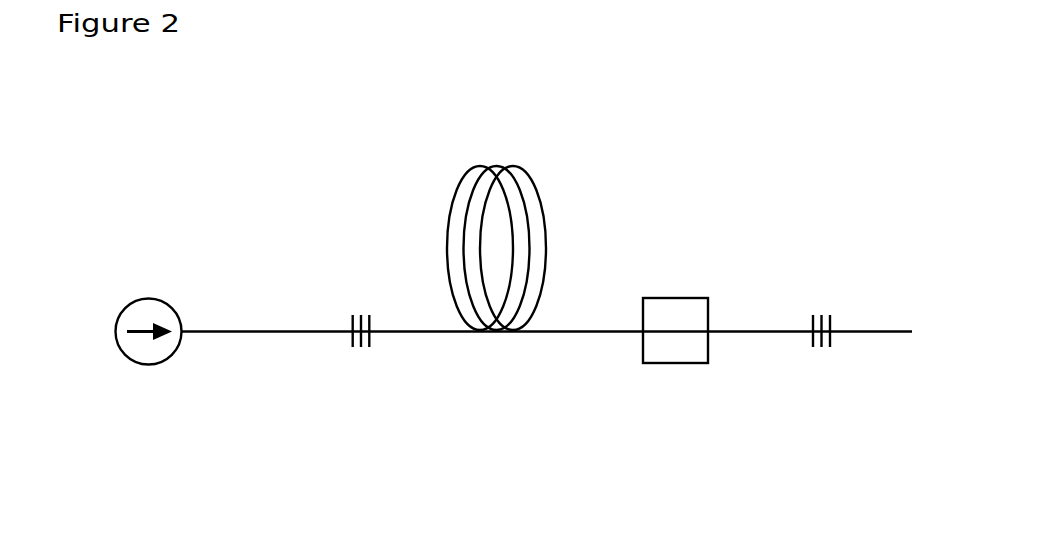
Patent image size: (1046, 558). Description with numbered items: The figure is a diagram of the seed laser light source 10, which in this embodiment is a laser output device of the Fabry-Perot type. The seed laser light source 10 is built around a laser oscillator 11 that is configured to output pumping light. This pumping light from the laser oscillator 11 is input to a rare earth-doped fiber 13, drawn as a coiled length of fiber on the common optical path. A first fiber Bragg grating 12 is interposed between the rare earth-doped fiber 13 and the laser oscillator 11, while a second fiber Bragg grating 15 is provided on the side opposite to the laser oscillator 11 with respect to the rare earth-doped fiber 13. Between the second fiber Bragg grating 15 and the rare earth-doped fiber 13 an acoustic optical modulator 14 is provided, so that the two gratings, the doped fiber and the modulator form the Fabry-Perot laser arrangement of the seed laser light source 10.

The seed laser light source 10 is at (715, 145).
The laser oscillator 11 is at (150, 297).
The first fiber bragg grating 12 is at (351, 340).
The rare earth-doped fiber 13 is at (450, 331).
The acoustic optical modulator 14 is at (673, 298).
The second fiber bragg grating 15 is at (812, 338).